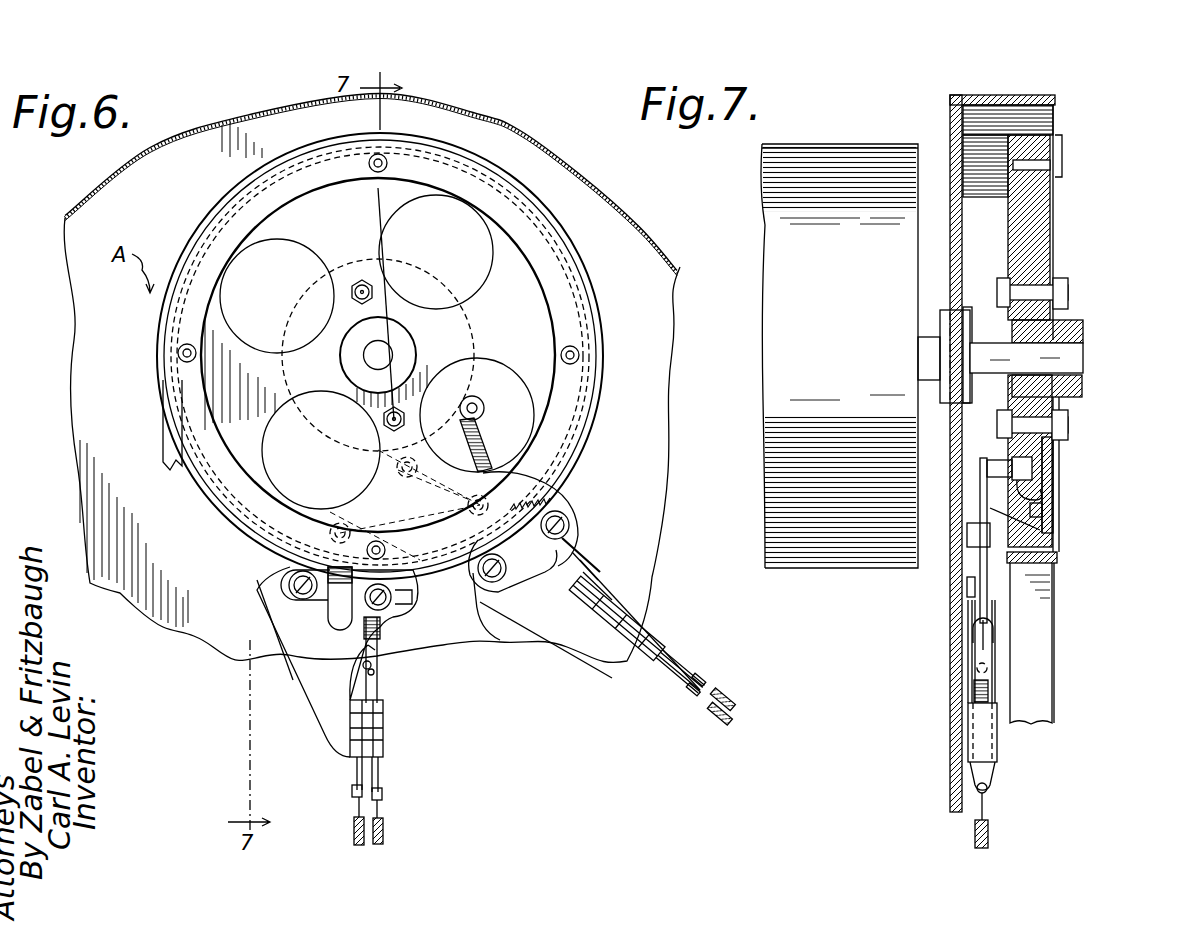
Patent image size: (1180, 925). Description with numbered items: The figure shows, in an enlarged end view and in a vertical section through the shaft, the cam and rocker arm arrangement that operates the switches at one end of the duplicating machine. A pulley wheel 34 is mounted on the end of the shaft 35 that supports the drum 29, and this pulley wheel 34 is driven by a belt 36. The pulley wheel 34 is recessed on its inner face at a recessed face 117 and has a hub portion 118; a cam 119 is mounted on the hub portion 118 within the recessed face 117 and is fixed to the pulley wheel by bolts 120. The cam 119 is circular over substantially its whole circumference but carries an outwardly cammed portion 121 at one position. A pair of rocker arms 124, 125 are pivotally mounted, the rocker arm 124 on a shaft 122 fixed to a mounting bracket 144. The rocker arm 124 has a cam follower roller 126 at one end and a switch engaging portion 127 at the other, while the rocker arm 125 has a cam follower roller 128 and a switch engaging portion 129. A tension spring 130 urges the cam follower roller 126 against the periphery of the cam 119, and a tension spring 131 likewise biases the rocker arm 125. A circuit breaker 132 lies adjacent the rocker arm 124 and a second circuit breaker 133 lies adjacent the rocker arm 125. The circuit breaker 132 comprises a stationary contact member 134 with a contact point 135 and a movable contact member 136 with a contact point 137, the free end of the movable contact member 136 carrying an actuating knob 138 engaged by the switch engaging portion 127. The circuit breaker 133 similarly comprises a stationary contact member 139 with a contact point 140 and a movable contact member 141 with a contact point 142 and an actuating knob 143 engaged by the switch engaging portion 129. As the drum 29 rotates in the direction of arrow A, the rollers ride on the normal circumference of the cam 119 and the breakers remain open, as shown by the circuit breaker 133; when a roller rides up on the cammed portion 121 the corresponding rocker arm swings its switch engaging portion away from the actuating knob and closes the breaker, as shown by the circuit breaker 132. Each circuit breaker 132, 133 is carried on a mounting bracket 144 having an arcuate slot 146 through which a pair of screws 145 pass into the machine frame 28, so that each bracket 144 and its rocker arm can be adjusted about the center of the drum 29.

In FIG. 6, the machine frame 28 is at (193, 627).
In FIG. 7, the machine frame 28 is at (950, 718).
In FIG. 6, the drum 29 is at (555, 242).
In FIG. 7, the drum 29 is at (815, 572).
In FIG. 6, the pulley wheel 34 is at (540, 170).
In FIG. 7, the pulley wheel 34 is at (1060, 210).
In FIG. 6, the shaft 35 is at (372, 352).
In FIG. 7, the shaft 35 is at (1077, 357).
In FIG. 6, the belt 36 is at (163, 432).
In FIG. 7, the belt 36 is at (1057, 605).
In FIG. 7, the recessed face 117 is at (1045, 522).
In FIG. 6, the hub portion 118 is at (415, 350).
In FIG. 7, the hub portion 118 is at (1083, 320).
In FIG. 6, the cam 119 is at (422, 282).
In FIG. 7, the cam 119 is at (1062, 272).
In FIG. 6, the bolts 120 is at (362, 282).
In FIG. 7, the bolts 120 is at (1072, 425).
In FIG. 6, the cammed portion 121 is at (398, 463).
In FIG. 7, the cammed portion 121 is at (1035, 468).
In FIG. 6, the shaft 122 is at (470, 500).
In FIG. 7, the shaft 122 is at (970, 557).
In FIG. 6, the rocker arm 124 is at (470, 507).
In FIG. 7, the rocker arm 124 is at (1040, 530).
In FIG. 6, the rocker arm 125 is at (498, 440).
In FIG. 6, the cam follower roller 126 is at (405, 478).
In FIG. 7, the cam follower roller 126 is at (1040, 500).
In FIG. 6, the switch engaging portion 127 is at (347, 620).
In FIG. 7, the switch engaging portion 127 is at (973, 628).
In FIG. 6, the cam follower roller 128 is at (490, 395).
In FIG. 6, the switch engaging portion 129 is at (560, 552).
In FIG. 6, the tension spring 130 is at (418, 597).
In FIG. 6, the tension spring 131 is at (570, 477).
In FIG. 6, the circuit breaker 132 is at (397, 720).
In FIG. 7, the circuit breaker 132 is at (1010, 752).
In FIG. 6, the circuit breaker 133 is at (671, 619).
In FIG. 6, the stationary contact member 134 is at (350, 690).
In FIG. 7, the stationary contact member 134 is at (973, 688).
In FIG. 6, the contact point 135 is at (363, 665).
In FIG. 6, the movable contact member 136 is at (380, 650).
In FIG. 7, the movable contact member 136 is at (985, 653).
In FIG. 6, the contact point 137 is at (378, 672).
In FIG. 7, the contact point 137 is at (990, 670).
In FIG. 6, the actuating knob 138 is at (392, 628).
In FIG. 7, the actuating knob 138 is at (990, 632).
In FIG. 6, the stationary contact member 139 is at (588, 628).
In FIG. 6, the contact point 140 is at (590, 593).
In FIG. 6, the movable contact member 141 is at (598, 580).
In FIG. 6, the contact point 142 is at (590, 558).
In FIG. 6, the actuating knob 143 is at (575, 545).
In FIG. 6, the mounting bracket 144 is at (313, 683).
In FIG. 7, the mounting bracket 144 is at (968, 653).
In FIG. 6, the screws 145 is at (292, 593).
In FIG. 7, the screws 145 is at (970, 587).
In FIG. 6, the arcuate slot 146 is at (290, 565).